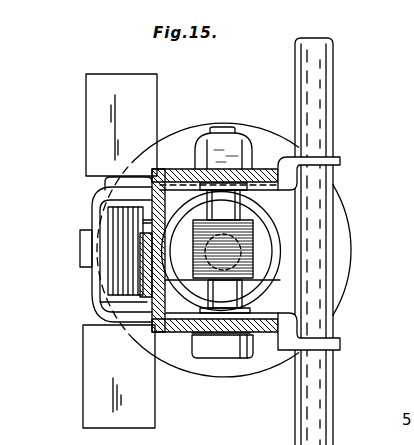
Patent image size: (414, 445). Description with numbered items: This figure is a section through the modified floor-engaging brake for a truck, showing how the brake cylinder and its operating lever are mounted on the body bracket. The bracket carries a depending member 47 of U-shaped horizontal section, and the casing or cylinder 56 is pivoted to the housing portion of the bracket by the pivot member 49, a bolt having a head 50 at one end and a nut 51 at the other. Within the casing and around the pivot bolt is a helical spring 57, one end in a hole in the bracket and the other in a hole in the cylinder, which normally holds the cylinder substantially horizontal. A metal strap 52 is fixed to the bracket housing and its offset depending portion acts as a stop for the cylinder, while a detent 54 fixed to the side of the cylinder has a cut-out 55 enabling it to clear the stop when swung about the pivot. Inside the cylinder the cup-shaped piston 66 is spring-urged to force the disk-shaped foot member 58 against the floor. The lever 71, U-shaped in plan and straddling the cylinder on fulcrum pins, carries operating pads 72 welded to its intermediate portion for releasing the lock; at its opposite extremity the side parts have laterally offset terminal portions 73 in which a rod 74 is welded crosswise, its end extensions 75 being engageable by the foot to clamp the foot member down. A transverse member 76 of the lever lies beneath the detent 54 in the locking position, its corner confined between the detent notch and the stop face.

The depending member 47 is at (172, 182).
The pivot member 49 is at (244, 208).
The head 50 is at (223, 350).
The nut 51 is at (222, 148).
The metal strap 52 is at (143, 257).
The detent 54 is at (92, 199).
The cut-out 55 is at (88, 234).
The casing or cylinder 56 is at (259, 296).
The helical spring 57 is at (198, 306).
The foot member 58 is at (251, 368).
The piston 66 is at (268, 243).
The lever 71 is at (278, 189).
The operating pads 72 is at (88, 143).
The laterally offset terminal portions 73 is at (326, 158).
The rod 74 is at (318, 255).
The end extensions 75 is at (318, 88).
The transverse member 76 is at (112, 258).